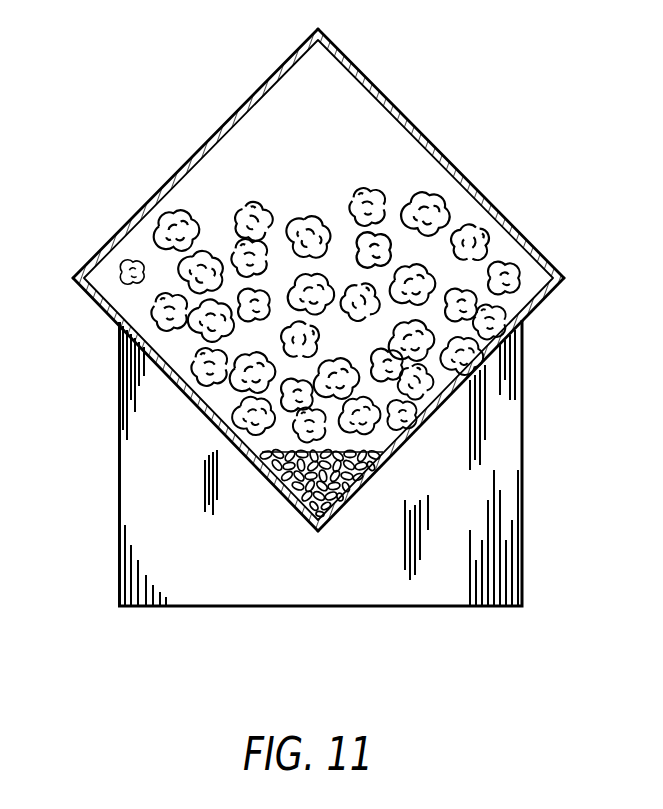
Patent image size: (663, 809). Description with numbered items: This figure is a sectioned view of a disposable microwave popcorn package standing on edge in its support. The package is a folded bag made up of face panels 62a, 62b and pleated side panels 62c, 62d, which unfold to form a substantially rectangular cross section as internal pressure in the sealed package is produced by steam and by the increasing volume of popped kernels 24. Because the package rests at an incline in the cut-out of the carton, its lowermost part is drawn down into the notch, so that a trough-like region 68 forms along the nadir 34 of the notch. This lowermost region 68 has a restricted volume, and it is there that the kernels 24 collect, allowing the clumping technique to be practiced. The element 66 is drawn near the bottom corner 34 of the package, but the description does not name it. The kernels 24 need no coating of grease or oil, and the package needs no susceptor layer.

The face panel 62a is at (88, 297).
The face panel 62b is at (430, 133).
The pleated side panel 62c is at (543, 312).
The pleated side panel 62d is at (250, 87).
The trough-like region 68 is at (293, 497).
The kernels 24 is at (385, 455).
The bottom corner 66 is at (311, 524).
The nadir 34 is at (319, 531).